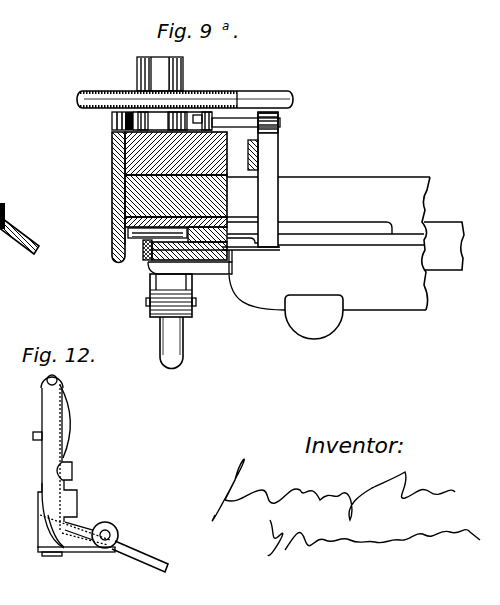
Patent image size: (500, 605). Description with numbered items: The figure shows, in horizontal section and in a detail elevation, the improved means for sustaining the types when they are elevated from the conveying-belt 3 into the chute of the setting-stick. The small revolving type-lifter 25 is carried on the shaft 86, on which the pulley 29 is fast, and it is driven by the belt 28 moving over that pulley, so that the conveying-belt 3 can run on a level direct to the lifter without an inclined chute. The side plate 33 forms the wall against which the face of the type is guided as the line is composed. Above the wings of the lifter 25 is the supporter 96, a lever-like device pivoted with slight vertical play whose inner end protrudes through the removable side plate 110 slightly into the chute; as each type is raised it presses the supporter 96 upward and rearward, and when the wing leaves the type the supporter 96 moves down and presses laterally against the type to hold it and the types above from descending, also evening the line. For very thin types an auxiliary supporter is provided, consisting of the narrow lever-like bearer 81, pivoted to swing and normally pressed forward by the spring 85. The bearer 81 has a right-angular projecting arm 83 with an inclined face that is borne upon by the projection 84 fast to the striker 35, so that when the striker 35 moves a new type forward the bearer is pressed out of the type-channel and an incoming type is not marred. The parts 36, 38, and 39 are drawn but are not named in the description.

In FIG. 9A, the conveying-belt 3 is at (371, 258).
In FIG. 9A, the type-lifter 25 is at (112, 233).
In FIG. 9A, the belt 28 is at (280, 90).
In FIG. 9A, the pulley 29 is at (219, 88).
In FIG. 9A, the side plate 33 is at (118, 181).
In FIG. 9A, the striker 35 is at (272, 251).
In FIG. 9A, the bar 36 is at (280, 158).
In FIG. 9A, the collar 38 is at (112, 119).
In FIG. 9A, the plate 39 is at (268, 121).
In FIG. 9A, the bearer 81 is at (143, 252).
In FIG. 12, the bearer 81 is at (47, 457).
In FIG. 9A, the projecting arm 83 is at (218, 275).
In FIG. 12, the projecting arm 83 is at (78, 497).
In FIG. 9A, the projection 84 is at (238, 255).
In FIG. 12, the spring 85 is at (72, 417).
In FIG. 9A, the shaft 86 is at (160, 56).
In FIG. 9A, the supporter 96 is at (91, 286).
In FIG. 12, the supporter 96 is at (38, 510).
In FIG. 9A, the removable side plate 110 is at (171, 295).
In FIG. 12, the removable side plate 110 is at (42, 491).